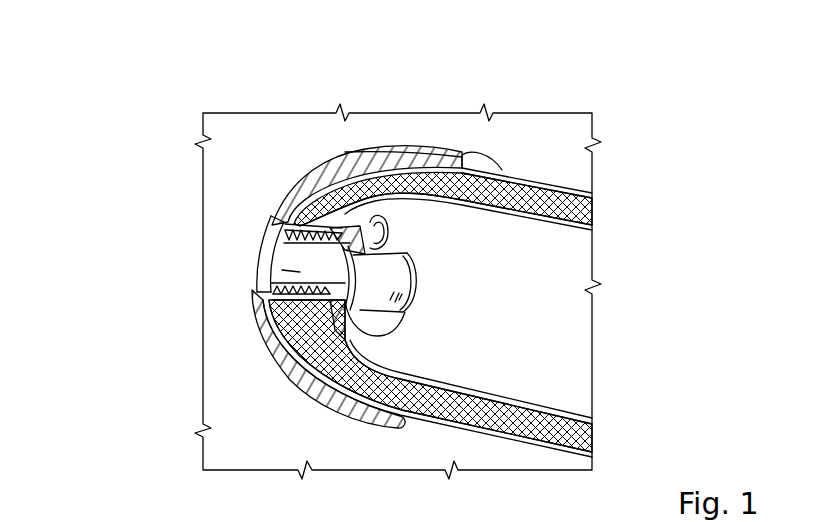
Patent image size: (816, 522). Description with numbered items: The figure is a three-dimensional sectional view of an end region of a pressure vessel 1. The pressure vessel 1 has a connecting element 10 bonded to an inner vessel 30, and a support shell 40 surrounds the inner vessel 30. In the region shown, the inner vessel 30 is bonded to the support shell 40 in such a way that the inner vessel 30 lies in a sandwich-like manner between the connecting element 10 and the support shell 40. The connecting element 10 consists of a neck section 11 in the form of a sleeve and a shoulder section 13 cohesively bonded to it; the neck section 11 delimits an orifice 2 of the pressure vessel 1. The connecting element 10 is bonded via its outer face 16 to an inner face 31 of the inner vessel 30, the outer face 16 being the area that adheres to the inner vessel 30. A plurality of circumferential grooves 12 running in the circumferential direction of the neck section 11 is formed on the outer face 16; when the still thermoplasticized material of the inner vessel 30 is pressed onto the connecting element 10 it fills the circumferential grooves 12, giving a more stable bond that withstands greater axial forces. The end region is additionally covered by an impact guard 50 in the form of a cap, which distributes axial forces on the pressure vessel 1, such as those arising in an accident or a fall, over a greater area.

The pressure vessel 1 is at (192, 180).
The orifice 2 is at (262, 250).
The connecting element 10 is at (221, 239).
The neck section 11 is at (300, 272).
The circumferential grooves 12 is at (263, 303).
The shoulder section 13 is at (333, 373).
The outer face 16 is at (342, 222).
The inner vessel 30 is at (593, 230).
The inner face 31 is at (538, 280).
The support shell 40 is at (593, 216).
The impact guard 50 is at (300, 190).